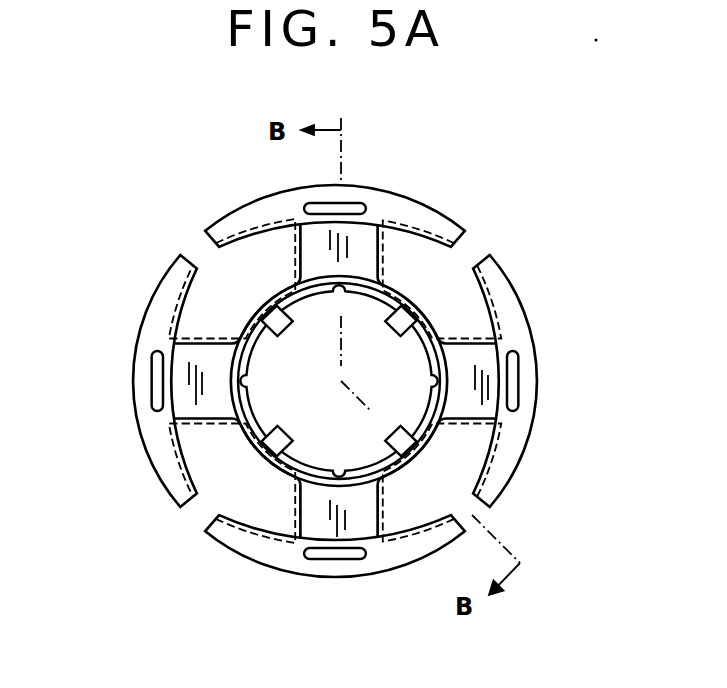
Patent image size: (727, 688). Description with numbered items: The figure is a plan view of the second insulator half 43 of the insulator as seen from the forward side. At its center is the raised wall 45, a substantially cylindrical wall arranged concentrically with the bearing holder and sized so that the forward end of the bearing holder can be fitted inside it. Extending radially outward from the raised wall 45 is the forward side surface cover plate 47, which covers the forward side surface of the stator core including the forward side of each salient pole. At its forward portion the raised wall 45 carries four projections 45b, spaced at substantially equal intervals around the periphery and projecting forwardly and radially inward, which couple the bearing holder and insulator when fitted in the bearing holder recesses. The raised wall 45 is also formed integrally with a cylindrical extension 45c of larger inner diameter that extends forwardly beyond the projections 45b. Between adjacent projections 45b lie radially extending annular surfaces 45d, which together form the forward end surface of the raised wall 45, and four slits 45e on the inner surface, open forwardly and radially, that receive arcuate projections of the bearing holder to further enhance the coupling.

The second insulator half 43 is at (241, 195).
The raised wall 45 is at (368, 292).
The projections 45b is at (285, 333).
The cylindrical extension 45c is at (278, 467).
The annular surfaces 45d is at (393, 300).
The slits 45e is at (330, 288).
The forward side surface cover plate 47 is at (396, 204).